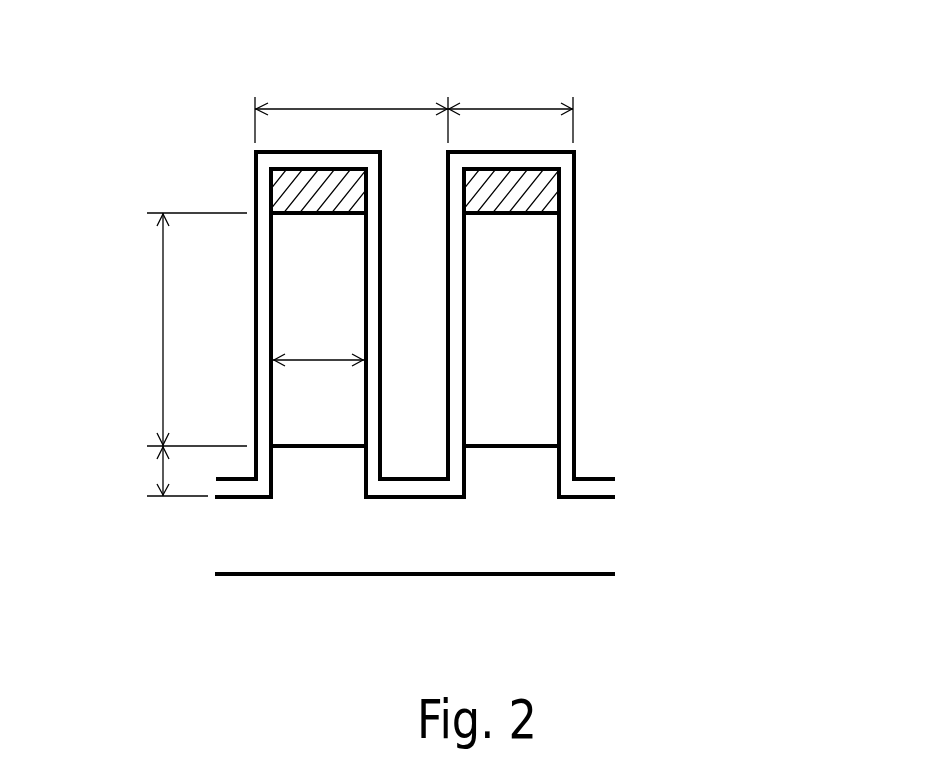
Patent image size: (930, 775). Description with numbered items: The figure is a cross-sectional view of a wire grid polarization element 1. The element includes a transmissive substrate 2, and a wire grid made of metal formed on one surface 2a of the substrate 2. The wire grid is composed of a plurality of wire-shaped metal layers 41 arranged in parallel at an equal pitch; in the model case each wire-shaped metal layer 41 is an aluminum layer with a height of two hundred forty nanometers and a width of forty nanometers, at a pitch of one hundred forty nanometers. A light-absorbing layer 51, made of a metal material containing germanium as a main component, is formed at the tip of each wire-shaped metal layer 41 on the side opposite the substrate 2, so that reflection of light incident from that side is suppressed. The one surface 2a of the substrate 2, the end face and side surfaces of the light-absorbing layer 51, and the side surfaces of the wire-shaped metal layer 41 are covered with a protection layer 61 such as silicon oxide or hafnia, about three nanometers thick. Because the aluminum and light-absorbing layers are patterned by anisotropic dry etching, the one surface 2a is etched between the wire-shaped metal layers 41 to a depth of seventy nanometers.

The wire grid polarization element 1 is at (184, 128).
The substrate 2 is at (540, 558).
The one surface of the substrate 2a is at (592, 495).
The wire-shaped metal layer 41 is at (547, 380).
The light-absorbing layer 51 is at (550, 193).
The protection layer 61 is at (565, 162).